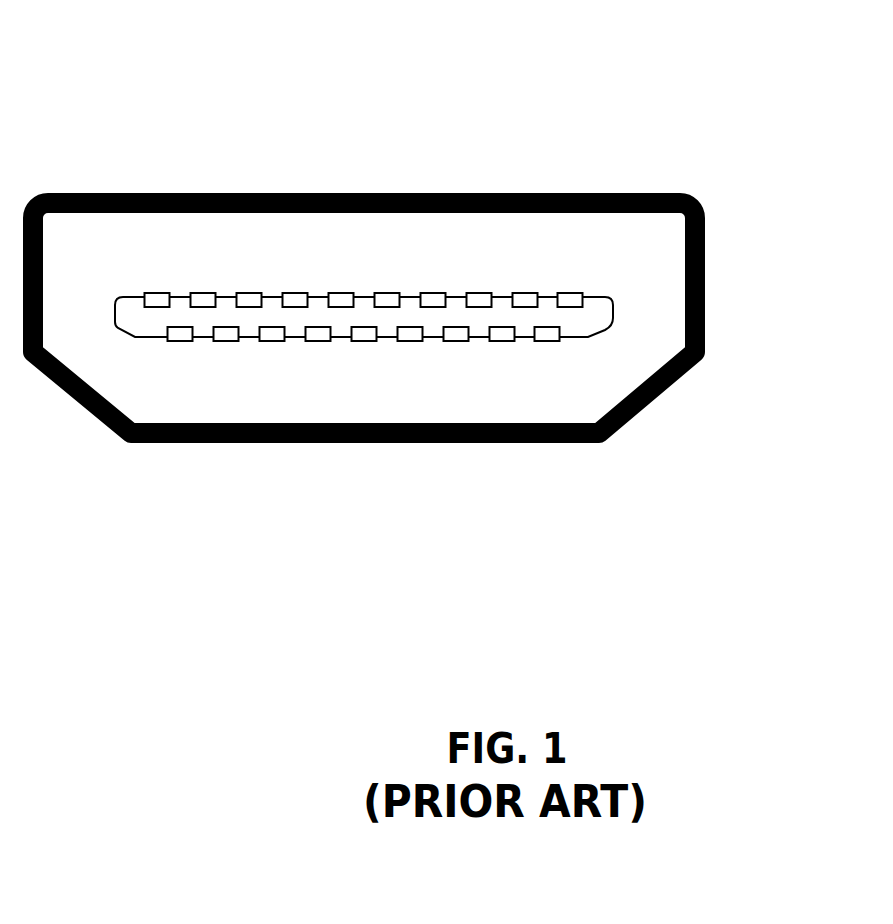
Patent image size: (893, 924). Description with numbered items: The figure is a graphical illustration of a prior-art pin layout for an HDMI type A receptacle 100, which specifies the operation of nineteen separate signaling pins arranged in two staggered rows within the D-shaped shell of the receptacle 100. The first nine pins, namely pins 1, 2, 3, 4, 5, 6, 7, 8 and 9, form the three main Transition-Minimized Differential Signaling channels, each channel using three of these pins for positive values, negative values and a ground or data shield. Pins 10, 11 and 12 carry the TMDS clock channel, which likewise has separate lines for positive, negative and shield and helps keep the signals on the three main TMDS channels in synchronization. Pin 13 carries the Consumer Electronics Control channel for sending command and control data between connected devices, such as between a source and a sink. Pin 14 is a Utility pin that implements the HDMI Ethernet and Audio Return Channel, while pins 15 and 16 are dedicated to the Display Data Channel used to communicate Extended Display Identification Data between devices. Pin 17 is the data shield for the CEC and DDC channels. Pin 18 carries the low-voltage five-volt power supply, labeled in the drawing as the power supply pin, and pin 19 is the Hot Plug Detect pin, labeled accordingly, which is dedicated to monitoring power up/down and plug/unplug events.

The HDMI type A receptacle 100 is at (705, 287).
The TMDS channel pin 1 is at (570, 285).
The TMDS channel pin 2 is at (547, 351).
The TMDS channel pin 3 is at (525, 285).
The TMDS channel pin 4 is at (502, 351).
The TMDS channel pin 5 is at (479, 285).
The TMDS channel pin 6 is at (456, 351).
The TMDS channel pin 7 is at (433, 285).
The TMDS channel pin 8 is at (410, 351).
The TMDS channel pin 9 is at (387, 285).
The TMDS clock channel pin 10 is at (363, 351).
The TMDS clock channel pin 11 is at (340, 285).
The TMDS clock channel pin 12 is at (317, 351).
The CEC channel pin 13 is at (294, 285).
The Utility pin 14 is at (271, 351).
The DDC pin 15 is at (248, 285).
The DDC pin 16 is at (225, 351).
The CEC/DDC data shield pin 17 is at (202, 285).
The +5V power supply pin 18 is at (180, 512).
The Hot Plug Detect pin 19 is at (156, 38).